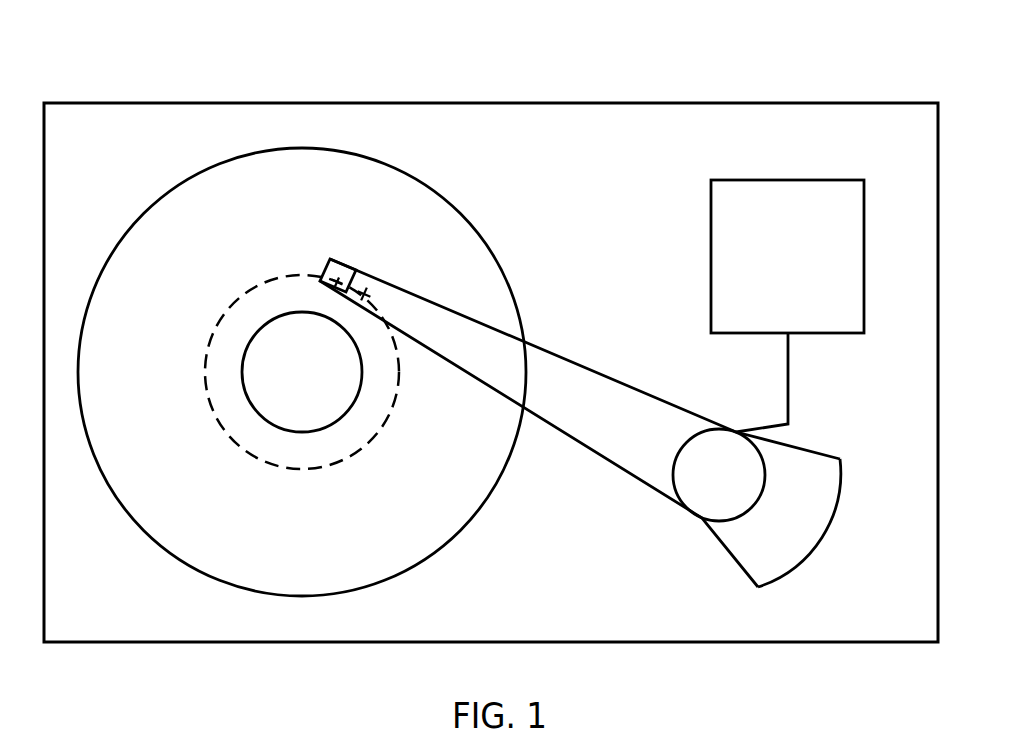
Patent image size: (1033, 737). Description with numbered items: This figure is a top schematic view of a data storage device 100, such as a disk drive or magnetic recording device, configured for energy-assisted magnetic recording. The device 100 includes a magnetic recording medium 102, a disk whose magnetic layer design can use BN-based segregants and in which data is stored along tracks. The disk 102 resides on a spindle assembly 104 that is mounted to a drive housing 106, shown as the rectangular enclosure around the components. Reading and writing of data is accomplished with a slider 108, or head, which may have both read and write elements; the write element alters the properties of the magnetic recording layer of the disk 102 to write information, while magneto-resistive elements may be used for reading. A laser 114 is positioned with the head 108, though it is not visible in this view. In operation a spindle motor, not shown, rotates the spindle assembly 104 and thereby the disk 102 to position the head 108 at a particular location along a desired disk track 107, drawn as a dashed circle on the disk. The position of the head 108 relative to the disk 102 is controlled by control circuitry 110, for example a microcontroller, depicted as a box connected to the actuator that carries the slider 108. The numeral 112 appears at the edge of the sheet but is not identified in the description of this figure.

The data storage device 100 is at (201, 64).
The magnetic recording medium 102 is at (461, 209).
The spindle assembly 104 is at (327, 378).
The drive housing 106 is at (592, 103).
The disk track 107 is at (247, 292).
The slider 108 is at (356, 272).
The control circuitry 110 is at (808, 274).
The actuator 112 is at (318, 736).
The laser 114 is at (210, 732).